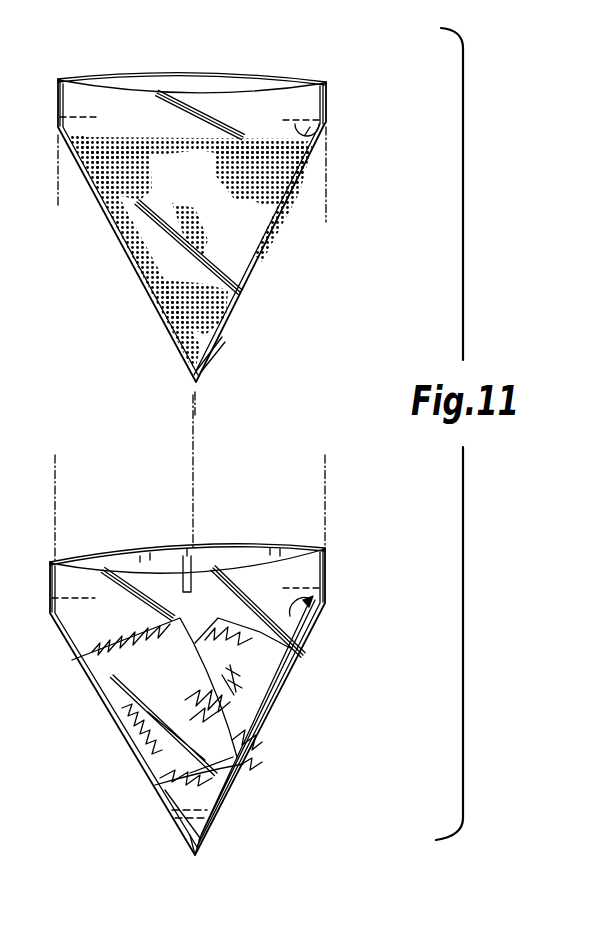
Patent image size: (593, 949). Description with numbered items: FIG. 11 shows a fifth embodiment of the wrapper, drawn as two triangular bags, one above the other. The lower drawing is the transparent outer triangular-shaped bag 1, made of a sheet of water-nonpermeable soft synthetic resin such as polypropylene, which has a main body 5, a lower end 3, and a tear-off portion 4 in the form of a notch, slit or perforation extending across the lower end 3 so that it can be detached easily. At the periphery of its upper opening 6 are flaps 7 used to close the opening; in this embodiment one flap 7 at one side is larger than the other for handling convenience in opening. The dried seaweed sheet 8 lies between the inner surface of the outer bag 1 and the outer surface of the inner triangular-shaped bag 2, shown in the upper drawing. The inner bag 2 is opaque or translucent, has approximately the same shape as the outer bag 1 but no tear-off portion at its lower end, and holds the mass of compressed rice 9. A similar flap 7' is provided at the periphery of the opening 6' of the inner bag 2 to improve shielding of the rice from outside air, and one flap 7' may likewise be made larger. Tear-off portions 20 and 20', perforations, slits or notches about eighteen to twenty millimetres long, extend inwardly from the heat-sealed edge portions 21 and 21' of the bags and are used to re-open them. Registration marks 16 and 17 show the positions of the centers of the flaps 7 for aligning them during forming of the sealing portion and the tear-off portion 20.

The outer triangular-shaped bag 1 is at (216, 643).
The inner triangular-shaped bag 2 is at (239, 217).
The lower end 3 is at (200, 838).
The tear-off portion 4 is at (203, 822).
The main body 5 is at (170, 800).
The upper opening 6 is at (187, 525).
The opening of inner bag 6' is at (192, 56).
The flap 7 is at (214, 575).
The flap of inner bag 7' is at (229, 90).
The dried seaweed sheet 8 is at (248, 690).
The mass of compressed rice 9 is at (282, 168).
The registration mark 16 is at (182, 583).
The registration mark 17 is at (64, 608).
The tear-off portion 20 is at (352, 591).
The tear-off portion of inner bag 20' is at (353, 154).
The edge portion 21 is at (347, 624).
The edge portion 21' is at (240, 119).